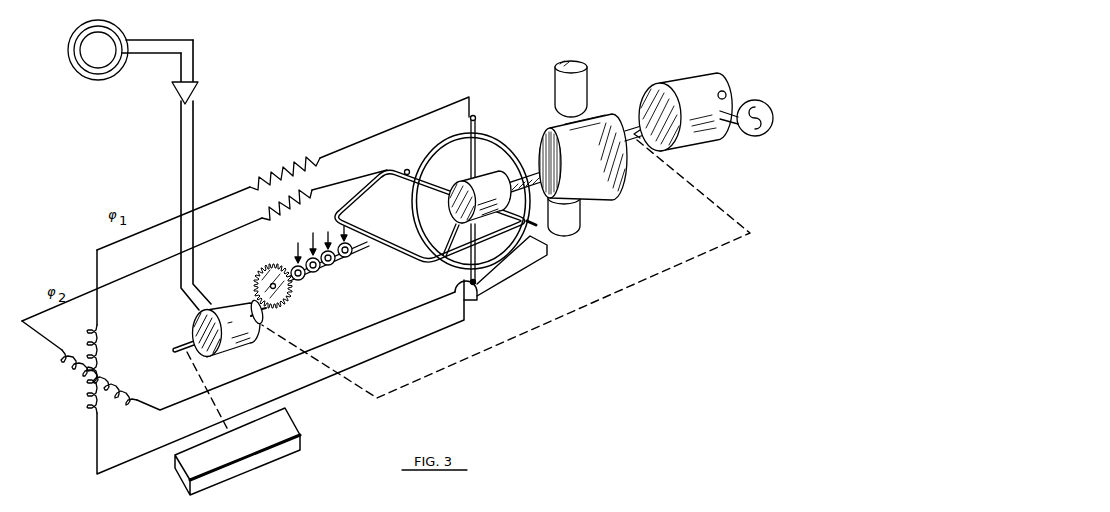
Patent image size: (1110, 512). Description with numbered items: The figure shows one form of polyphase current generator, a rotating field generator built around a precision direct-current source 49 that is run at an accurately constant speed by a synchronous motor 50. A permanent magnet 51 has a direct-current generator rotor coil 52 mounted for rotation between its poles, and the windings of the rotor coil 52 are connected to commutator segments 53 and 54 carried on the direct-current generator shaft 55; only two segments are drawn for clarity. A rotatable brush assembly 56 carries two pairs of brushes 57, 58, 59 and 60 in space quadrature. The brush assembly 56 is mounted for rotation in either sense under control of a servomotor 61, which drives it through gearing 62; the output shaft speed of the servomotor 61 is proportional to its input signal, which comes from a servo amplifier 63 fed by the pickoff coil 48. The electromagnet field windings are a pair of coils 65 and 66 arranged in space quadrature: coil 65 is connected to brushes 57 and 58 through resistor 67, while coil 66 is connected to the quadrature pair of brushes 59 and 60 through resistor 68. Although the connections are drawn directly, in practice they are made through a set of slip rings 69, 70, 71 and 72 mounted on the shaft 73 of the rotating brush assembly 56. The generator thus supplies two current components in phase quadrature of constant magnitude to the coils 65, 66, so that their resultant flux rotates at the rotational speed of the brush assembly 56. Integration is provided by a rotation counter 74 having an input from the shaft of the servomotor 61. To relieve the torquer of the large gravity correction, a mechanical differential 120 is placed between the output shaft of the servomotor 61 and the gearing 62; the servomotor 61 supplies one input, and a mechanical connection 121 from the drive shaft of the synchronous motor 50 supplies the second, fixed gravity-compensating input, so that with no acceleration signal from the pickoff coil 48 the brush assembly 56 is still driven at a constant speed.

The pickoff coil 48 is at (97, 80).
The servo amplifier 63 is at (199, 87).
The resistor 67 is at (292, 165).
The resistor 68 is at (305, 197).
The coil 66 is at (77, 356).
The coil 65 is at (87, 393).
The servomotor 61 is at (218, 312).
The mechanical differential 120 is at (260, 328).
The gearing 62 is at (268, 317).
The slip ring 72 is at (300, 281).
The slip ring 71 is at (315, 273).
The slip ring 70 is at (333, 267).
The slip ring 69 is at (350, 258).
The shaft 73 is at (370, 247).
The rotatable brush assembly 56 is at (431, 138).
The commutator segment 53 is at (486, 177).
The direct-current generator shaft 55 is at (528, 172).
The brush 57 is at (470, 161).
The brush 59 is at (432, 188).
The commutator segment 54 is at (457, 224).
The brush 60 is at (510, 211).
The brush 58 is at (480, 258).
The permanent magnet 51 is at (578, 73).
The direct-current generator rotor coil 52 is at (592, 118).
The precision direct-current source 49 is at (610, 190).
The synchronous motor 50 is at (692, 85).
The mechanical connection 121 is at (353, 380).
The rotation counter 74 is at (284, 447).